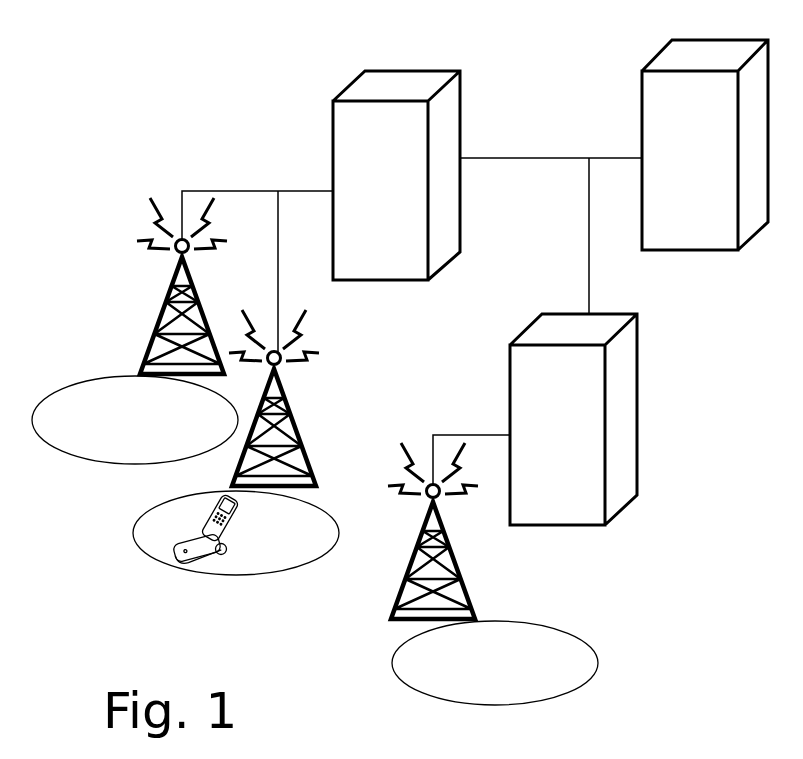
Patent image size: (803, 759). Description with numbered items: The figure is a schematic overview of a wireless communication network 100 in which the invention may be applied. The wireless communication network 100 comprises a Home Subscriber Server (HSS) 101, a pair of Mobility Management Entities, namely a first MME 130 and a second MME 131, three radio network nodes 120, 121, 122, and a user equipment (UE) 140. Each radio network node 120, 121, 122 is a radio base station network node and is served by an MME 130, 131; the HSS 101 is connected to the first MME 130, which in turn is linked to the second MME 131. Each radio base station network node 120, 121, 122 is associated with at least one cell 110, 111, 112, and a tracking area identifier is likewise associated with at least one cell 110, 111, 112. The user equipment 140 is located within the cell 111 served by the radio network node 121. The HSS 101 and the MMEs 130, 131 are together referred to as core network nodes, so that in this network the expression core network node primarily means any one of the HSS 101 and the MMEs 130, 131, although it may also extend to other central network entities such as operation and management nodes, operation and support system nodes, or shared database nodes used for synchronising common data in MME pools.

The wireless communication network 100 is at (238, 106).
The Home Subscriber Server (HSS) 101 is at (705, 145).
The cell 110 is at (145, 461).
The cell 111 is at (305, 572).
The cell 112 is at (548, 623).
The radio network node 120 is at (152, 360).
The radio network node 121 is at (306, 432).
The radio network node 122 is at (407, 561).
The Mobility Management Entity (MME) 130 is at (396, 175).
The Mobility Management Entity (MME) 131 is at (573, 419).
The user equipment (UE) 140 is at (228, 530).